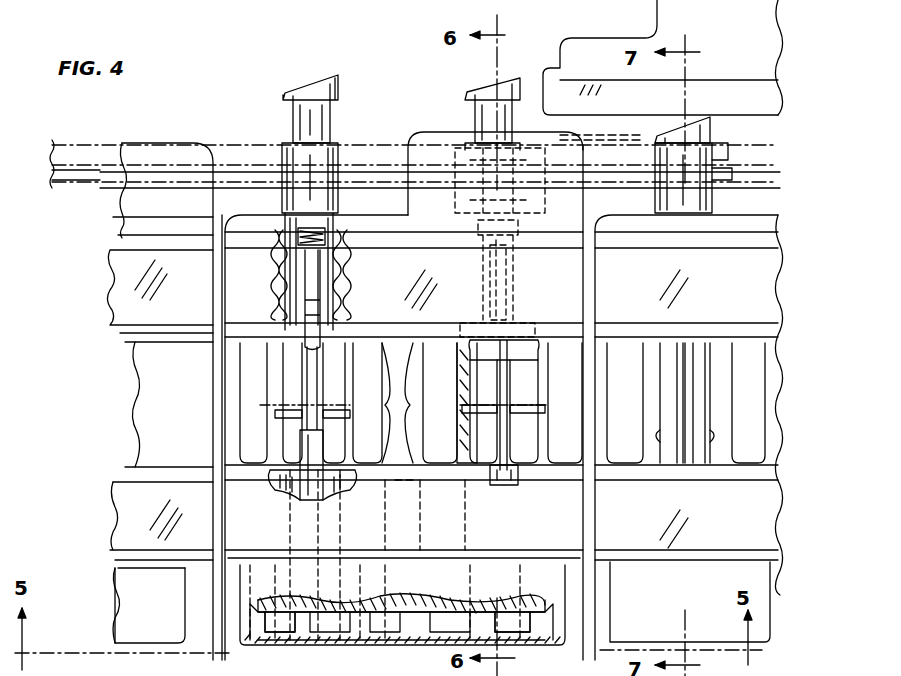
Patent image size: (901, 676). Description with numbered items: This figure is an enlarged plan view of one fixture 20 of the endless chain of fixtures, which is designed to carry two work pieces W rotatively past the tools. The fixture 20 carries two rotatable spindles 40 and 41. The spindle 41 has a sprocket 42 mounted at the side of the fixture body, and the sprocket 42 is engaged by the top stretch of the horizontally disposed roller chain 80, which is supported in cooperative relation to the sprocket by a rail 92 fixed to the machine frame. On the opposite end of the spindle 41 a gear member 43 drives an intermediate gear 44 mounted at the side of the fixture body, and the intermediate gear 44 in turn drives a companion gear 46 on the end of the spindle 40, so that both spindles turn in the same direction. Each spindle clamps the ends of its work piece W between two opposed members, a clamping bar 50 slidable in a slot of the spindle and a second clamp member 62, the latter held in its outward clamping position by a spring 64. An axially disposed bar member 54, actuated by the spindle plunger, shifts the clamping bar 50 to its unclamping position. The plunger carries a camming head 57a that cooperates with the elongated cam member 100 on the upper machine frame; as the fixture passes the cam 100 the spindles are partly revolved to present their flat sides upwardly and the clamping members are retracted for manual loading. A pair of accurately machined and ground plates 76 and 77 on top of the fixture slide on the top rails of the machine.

The fixture 20 is at (145, 230).
The spindle 40 is at (290, 280).
The spindle 41 is at (480, 283).
The sprocket 42 is at (445, 140).
The gear member 43 is at (518, 640).
The intermediate gear 44 is at (382, 633).
The companion gear 46 is at (288, 632).
The clamping bar 50 is at (312, 447).
The axially disposed bar member 54 is at (312, 380).
The cam cap 57a is at (308, 86).
The clamp member 62 is at (310, 340).
The spring 64 is at (300, 234).
The plate 76 is at (142, 540).
The plate 77 is at (125, 290).
The roller chain 80 is at (740, 160).
The rail 92 is at (635, 145).
The elongated cam member 100 is at (600, 90).
The web W is at (345, 407).